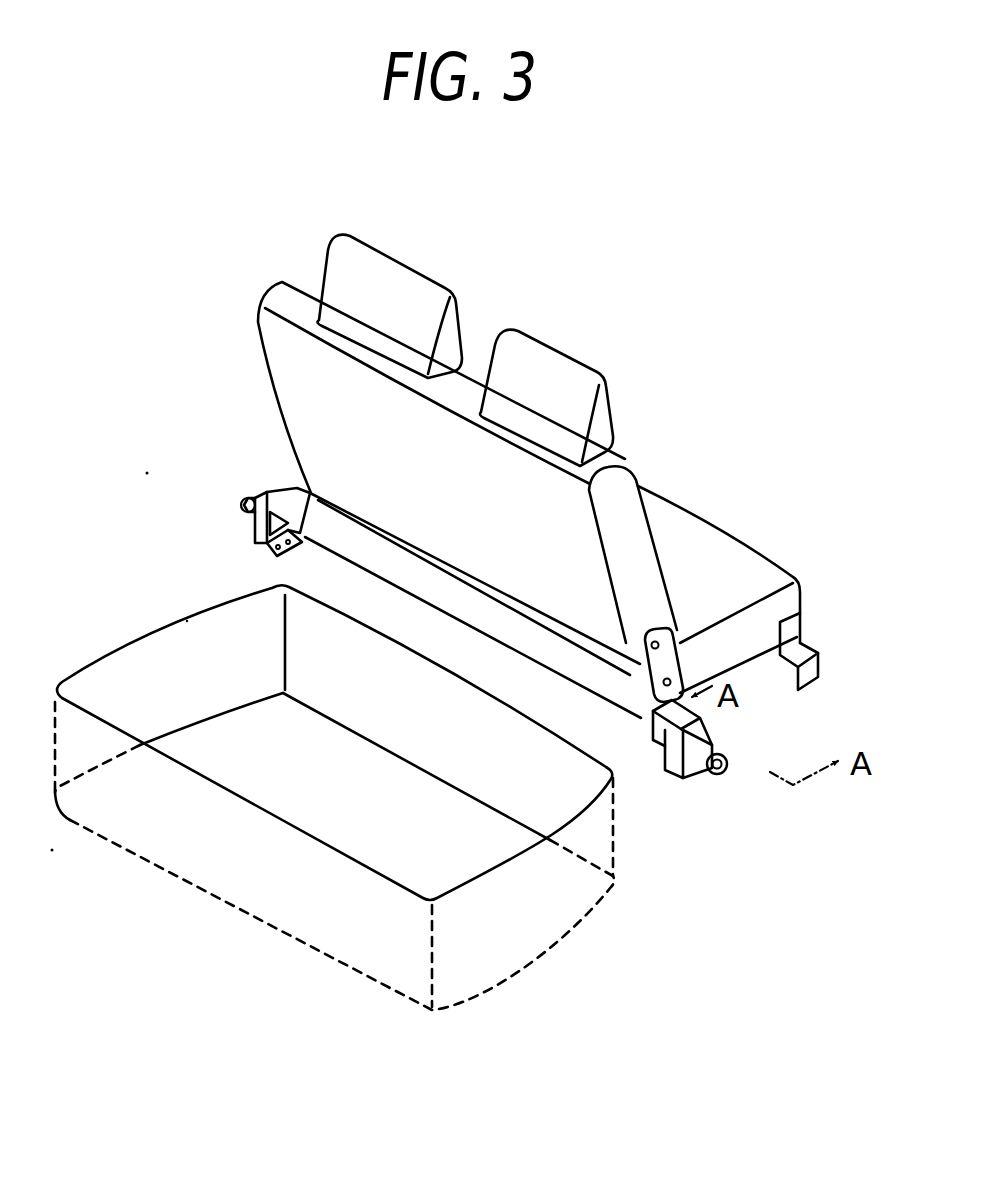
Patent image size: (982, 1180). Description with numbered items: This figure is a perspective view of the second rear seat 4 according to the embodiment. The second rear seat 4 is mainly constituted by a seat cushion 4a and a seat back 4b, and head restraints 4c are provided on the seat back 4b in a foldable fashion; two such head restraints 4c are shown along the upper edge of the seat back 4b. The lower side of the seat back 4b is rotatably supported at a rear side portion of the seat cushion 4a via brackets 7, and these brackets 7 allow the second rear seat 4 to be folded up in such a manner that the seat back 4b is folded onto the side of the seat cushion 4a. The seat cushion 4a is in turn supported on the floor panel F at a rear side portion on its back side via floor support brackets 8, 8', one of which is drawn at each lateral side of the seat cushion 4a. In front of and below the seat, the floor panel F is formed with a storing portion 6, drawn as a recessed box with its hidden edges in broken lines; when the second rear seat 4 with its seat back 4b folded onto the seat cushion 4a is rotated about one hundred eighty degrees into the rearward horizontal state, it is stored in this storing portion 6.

The second rear seat 4 is at (724, 530).
The seat cushion 4a is at (747, 572).
The seat back 4b is at (613, 534).
The head restraints 4c is at (563, 367).
The storing portion 6 is at (380, 833).
The brackets 7 is at (655, 718).
The floor support bracket 8 is at (728, 784).
The floor support bracket 8' is at (226, 453).
The floor panel F is at (633, 855).